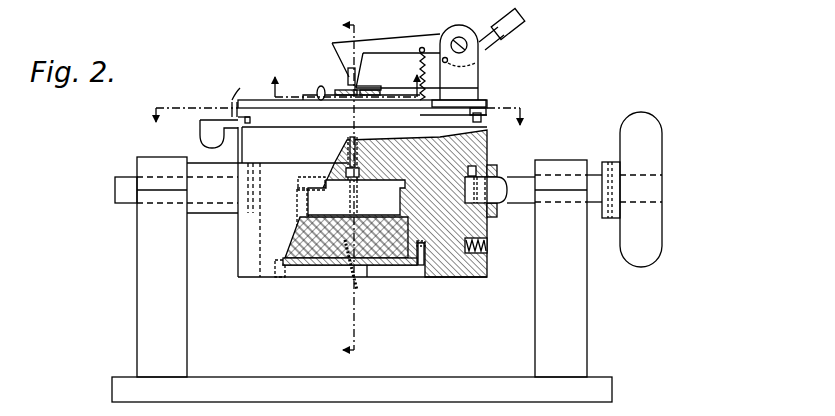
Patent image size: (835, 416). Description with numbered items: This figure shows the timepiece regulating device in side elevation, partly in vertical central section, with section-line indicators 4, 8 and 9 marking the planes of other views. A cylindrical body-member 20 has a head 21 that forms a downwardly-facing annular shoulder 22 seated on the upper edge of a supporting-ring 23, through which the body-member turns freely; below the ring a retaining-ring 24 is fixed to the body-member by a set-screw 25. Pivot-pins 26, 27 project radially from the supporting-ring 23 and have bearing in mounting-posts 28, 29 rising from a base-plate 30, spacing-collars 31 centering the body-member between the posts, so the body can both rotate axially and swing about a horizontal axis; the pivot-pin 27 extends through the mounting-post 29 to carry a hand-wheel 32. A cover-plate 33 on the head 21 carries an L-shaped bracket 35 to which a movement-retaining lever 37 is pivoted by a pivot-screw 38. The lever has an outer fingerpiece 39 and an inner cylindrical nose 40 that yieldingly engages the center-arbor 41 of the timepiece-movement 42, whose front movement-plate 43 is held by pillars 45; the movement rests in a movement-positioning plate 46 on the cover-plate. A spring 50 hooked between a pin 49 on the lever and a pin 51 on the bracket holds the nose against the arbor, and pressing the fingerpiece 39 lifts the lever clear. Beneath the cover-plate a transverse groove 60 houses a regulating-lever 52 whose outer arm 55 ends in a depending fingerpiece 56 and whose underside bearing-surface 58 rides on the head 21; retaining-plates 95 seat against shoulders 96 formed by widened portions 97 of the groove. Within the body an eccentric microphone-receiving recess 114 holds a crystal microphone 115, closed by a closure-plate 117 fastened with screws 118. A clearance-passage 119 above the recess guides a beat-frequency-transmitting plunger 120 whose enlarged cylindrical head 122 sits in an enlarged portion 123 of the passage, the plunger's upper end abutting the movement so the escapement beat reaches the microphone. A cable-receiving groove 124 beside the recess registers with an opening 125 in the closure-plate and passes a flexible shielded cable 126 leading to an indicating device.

The section line 4- 4 is at (338, 127).
The section line 8- 8 is at (341, 191).
The section line 9- 9 is at (344, 76).
The body-member 20 is at (448, 277).
The head 21 is at (488, 155).
The annular shoulder 22 is at (278, 166).
The supporting-ring 23 is at (236, 190).
The retaining-ring 24 is at (474, 277).
The set-screw 25 is at (488, 248).
The pivot-pin 26 is at (118, 203).
The pivot-pin 27 is at (592, 162).
The mounting-post 28 is at (137, 292).
The mounting-post 29 is at (587, 324).
The base-plate 30 is at (380, 377).
The spacing-collar 31 is at (208, 214).
The hand-wheel 32 is at (662, 248).
The cover-plate 33 is at (260, 92).
The L-shaped bracket 35 is at (479, 76).
The movement-retaining lever 37 is at (398, 34).
The pivot-screw 38 is at (460, 37).
The fingerpiece 39 is at (524, 14).
The movement-retaining nose 40 is at (348, 77).
The center-arbor 41 is at (357, 90).
The timepiece-movement 42 is at (375, 90).
The front movement-plate 43 is at (333, 87).
The pillars 45 is at (380, 94).
The movement-positioning plate 46 is at (310, 99).
The pin 49 is at (419, 48).
The spring 50 is at (459, 83).
The pin 51 is at (436, 113).
The regulating-lever 52 is at (232, 108).
The outer arm 55 is at (232, 92).
The depending fingerpiece 56 is at (214, 146).
The bearing-surface 58 is at (250, 145).
The transverse groove 60 is at (488, 110).
The retaining-plates 95 is at (473, 118).
The shoulders 96 is at (250, 120).
The widened portions 97 is at (243, 127).
The microphone-receiving recess 114 is at (302, 198).
The crystal microphone 115 is at (297, 214).
The closure-plate 117 is at (304, 265).
The screws 118 is at (422, 277).
The clearance-passage 119 is at (348, 158).
The beat-frequency-transmitting rod 120 is at (350, 143).
The enlarged cylindrical head 122 is at (356, 197).
The enlarged portion 123 is at (341, 197).
The cable-receiving groove 124 is at (337, 265).
The opening 125 is at (367, 277).
The flexible shielded cable 126 is at (358, 292).